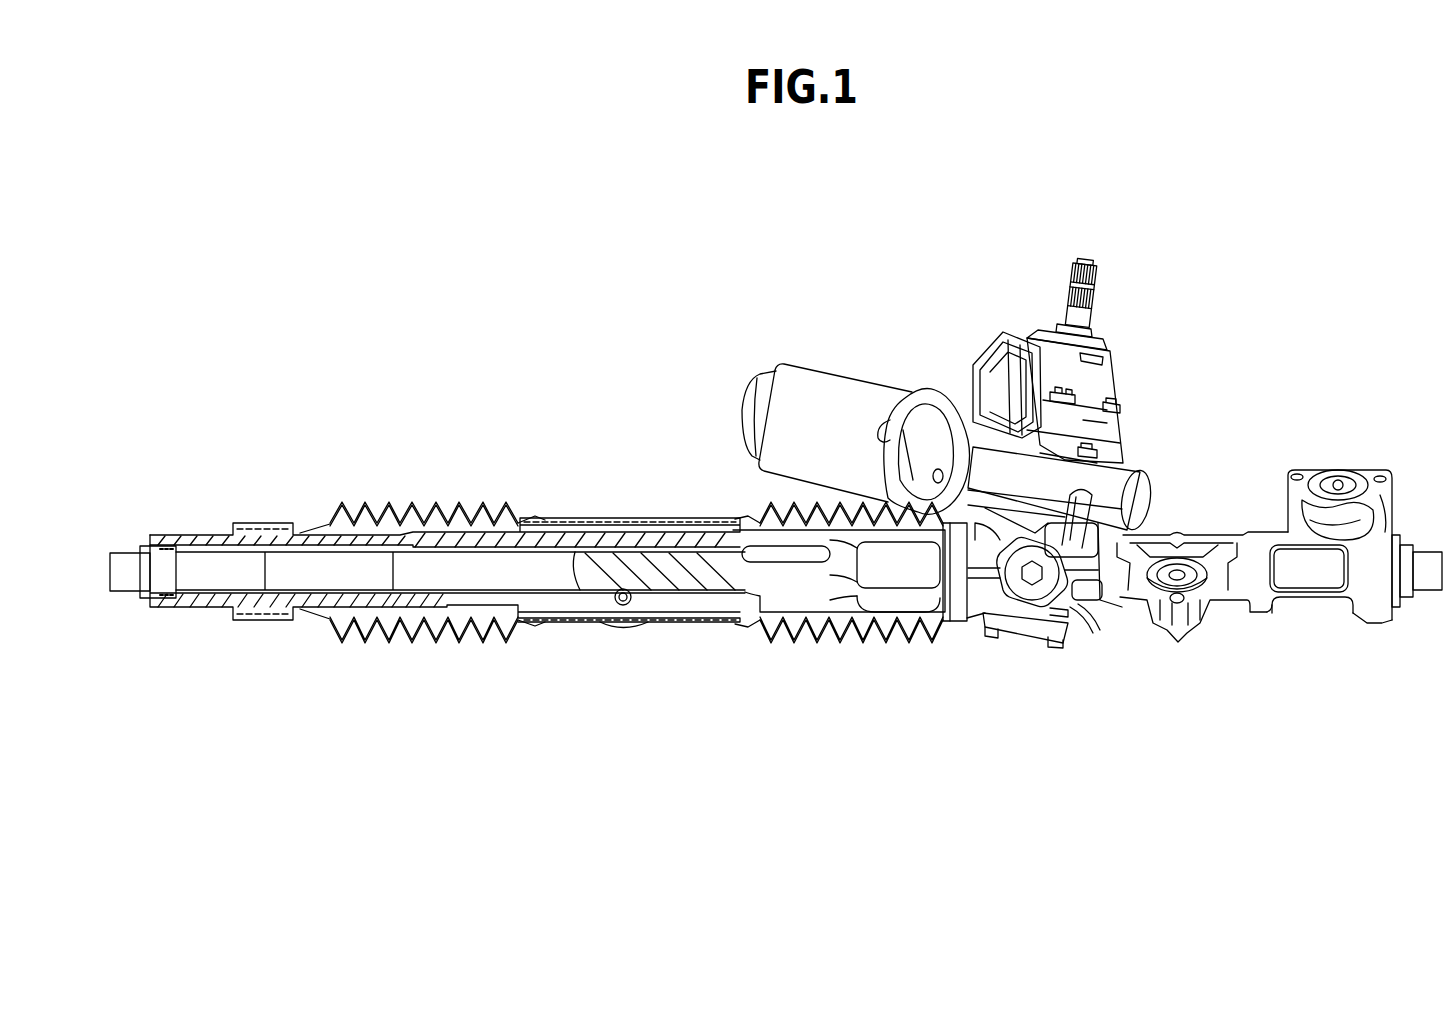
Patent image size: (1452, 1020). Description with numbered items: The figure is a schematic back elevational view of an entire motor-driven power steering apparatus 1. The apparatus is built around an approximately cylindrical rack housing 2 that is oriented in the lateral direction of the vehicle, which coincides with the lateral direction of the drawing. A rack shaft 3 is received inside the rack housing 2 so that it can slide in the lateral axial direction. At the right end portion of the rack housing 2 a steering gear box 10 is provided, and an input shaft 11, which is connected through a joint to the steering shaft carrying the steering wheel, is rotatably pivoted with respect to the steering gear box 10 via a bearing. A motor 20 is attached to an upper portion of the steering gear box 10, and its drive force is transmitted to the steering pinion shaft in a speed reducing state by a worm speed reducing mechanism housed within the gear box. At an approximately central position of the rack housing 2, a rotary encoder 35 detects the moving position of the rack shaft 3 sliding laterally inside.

The motor-driven power steering apparatus 1 is at (774, 314).
The rack housing 2 is at (575, 623).
The rack shaft 3 is at (580, 568).
The steering gear box 10 is at (1072, 442).
The input shaft 11 is at (1093, 305).
The motor 20 is at (836, 366).
The rotary encoder 35 is at (627, 623).